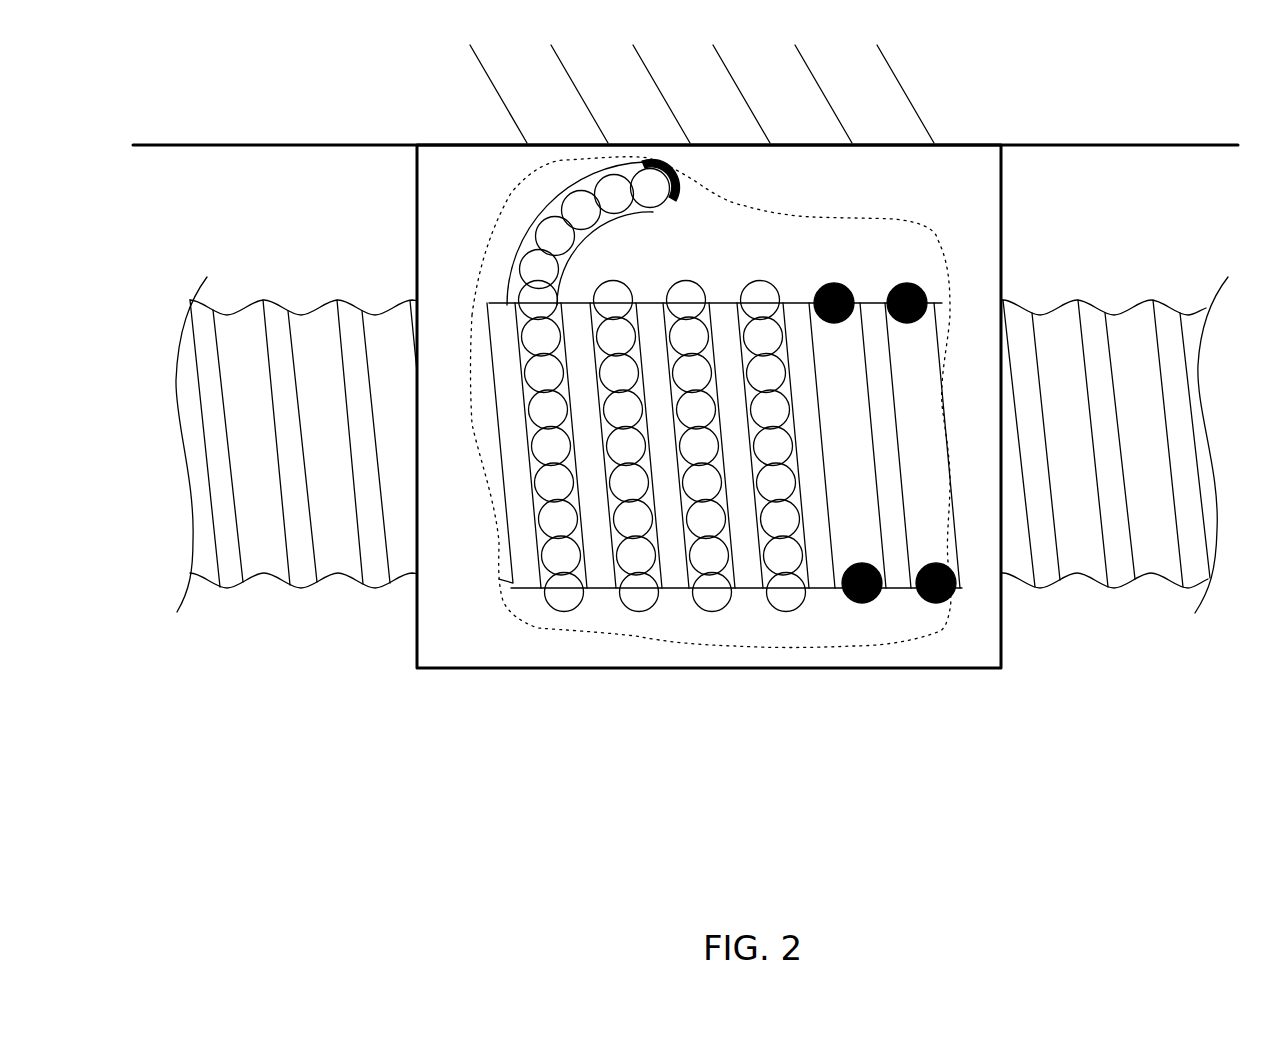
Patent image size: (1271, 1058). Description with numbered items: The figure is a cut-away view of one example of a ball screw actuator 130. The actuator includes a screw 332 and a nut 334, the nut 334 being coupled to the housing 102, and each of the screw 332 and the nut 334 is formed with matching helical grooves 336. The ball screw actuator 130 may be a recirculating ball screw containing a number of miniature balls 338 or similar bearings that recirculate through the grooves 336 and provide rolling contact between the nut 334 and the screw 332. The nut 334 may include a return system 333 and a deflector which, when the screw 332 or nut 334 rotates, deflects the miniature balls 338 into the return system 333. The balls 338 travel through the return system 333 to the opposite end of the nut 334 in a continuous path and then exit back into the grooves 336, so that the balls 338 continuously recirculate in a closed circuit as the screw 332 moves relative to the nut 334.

The housing 102 is at (307, 143).
The ball screw actuator 130 is at (465, 808).
The screw 332 is at (272, 300).
The return system 333 is at (617, 228).
The nut 334 is at (455, 660).
The helical grooves 336 is at (912, 352).
The miniature balls 338 is at (715, 601).